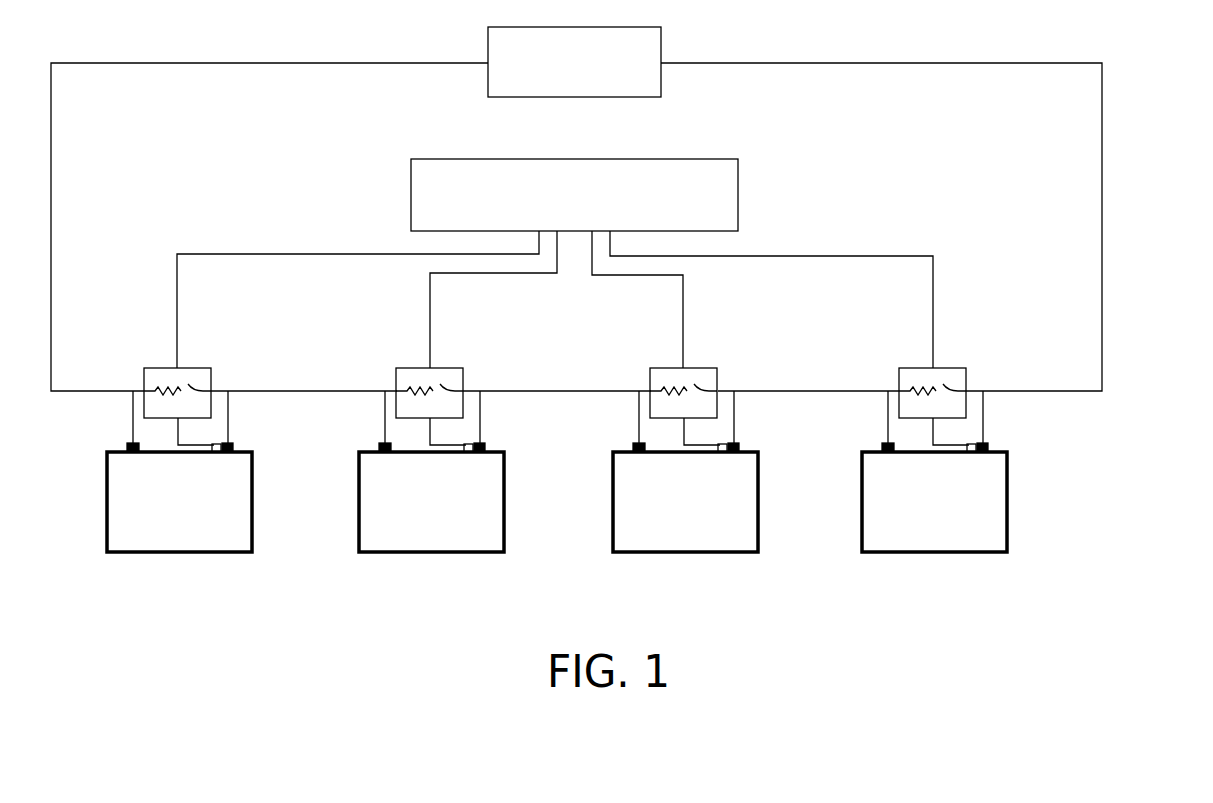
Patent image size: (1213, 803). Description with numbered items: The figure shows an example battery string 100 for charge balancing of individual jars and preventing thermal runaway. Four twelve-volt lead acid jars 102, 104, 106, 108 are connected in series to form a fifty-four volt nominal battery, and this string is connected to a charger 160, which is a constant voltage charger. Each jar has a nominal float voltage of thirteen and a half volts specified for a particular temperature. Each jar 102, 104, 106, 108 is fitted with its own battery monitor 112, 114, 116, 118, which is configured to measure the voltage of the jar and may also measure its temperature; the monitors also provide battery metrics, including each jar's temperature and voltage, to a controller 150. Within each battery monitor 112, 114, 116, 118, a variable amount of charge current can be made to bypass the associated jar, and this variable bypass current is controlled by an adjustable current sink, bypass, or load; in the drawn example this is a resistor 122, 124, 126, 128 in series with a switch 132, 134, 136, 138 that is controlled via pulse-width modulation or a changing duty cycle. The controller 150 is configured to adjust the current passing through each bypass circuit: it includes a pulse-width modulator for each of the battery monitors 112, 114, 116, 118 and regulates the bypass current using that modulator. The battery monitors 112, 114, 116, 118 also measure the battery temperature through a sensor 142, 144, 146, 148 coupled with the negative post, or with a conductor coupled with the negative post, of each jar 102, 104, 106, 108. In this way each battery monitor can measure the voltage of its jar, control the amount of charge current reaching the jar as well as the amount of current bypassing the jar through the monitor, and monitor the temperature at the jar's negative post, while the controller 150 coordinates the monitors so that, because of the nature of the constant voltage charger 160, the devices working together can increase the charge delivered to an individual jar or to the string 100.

The battery string 100 is at (1085, 450).
The jar 102 is at (179, 497).
The jar 104 is at (431, 497).
The jar 106 is at (685, 497).
The jar 108 is at (934, 497).
The battery monitor 112 is at (180, 367).
The battery monitor 114 is at (460, 368).
The battery monitor 116 is at (714, 368).
The battery monitor 118 is at (966, 368).
The resistor 122 is at (143, 389).
The resistor 124 is at (375, 387).
The resistor 126 is at (610, 387).
The resistor 128 is at (853, 387).
The switch 132 is at (211, 393).
The switch 134 is at (482, 418).
The switch 136 is at (739, 418).
The switch 138 is at (993, 418).
The sensor 142 is at (228, 455).
The sensor 144 is at (511, 467).
The sensor 146 is at (767, 467).
The sensor 148 is at (1016, 467).
The controller 150 is at (555, 263).
The charger 160 is at (574, 62).